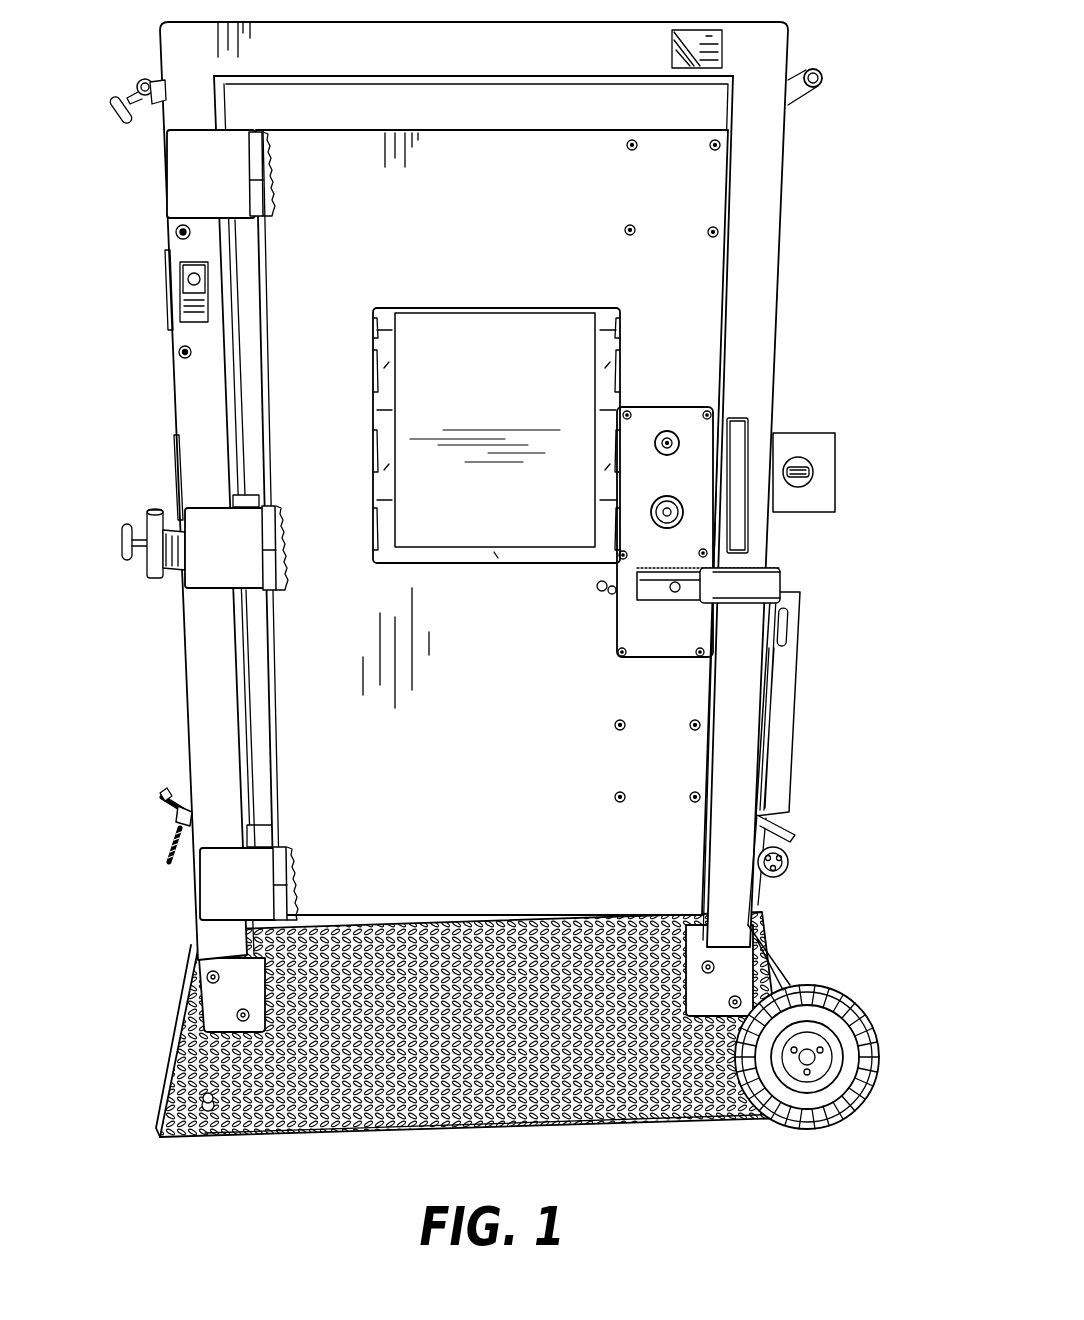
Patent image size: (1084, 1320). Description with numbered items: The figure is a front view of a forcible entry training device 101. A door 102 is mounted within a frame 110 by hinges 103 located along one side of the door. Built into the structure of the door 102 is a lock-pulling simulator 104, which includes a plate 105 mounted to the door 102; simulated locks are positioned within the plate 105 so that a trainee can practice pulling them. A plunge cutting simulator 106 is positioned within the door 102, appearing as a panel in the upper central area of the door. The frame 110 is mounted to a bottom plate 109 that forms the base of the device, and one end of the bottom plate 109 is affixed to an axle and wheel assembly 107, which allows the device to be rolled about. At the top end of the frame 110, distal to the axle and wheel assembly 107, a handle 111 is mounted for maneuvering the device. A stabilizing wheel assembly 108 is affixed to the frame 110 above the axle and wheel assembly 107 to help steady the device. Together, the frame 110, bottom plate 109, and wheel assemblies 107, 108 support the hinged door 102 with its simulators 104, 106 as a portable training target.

The forcible entry training device 101 is at (123, 938).
The door 102 is at (486, 708).
The hinges 103 is at (273, 182).
The lock-pulling simulator 104 is at (653, 641).
The plate 105 is at (676, 486).
The plunge cutting simulator 106 is at (485, 407).
The axle and wheel assembly 107 is at (763, 937).
The stabilizing wheel assembly 108 is at (797, 688).
The bottom plate 109 is at (160, 1130).
The frame 110 is at (768, 248).
The handle 111 is at (822, 63).